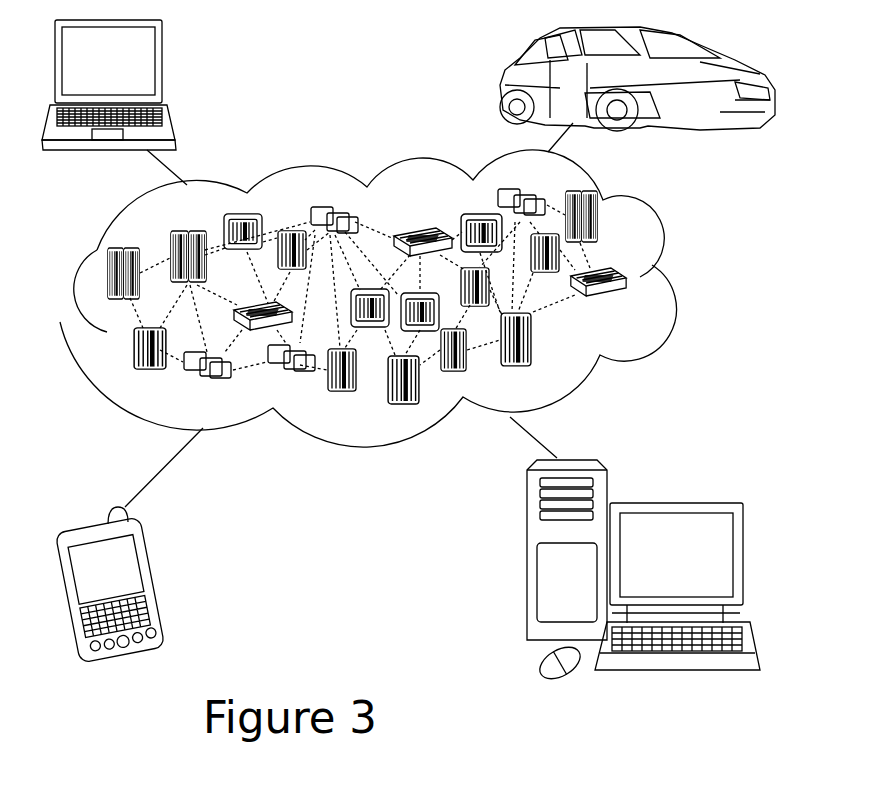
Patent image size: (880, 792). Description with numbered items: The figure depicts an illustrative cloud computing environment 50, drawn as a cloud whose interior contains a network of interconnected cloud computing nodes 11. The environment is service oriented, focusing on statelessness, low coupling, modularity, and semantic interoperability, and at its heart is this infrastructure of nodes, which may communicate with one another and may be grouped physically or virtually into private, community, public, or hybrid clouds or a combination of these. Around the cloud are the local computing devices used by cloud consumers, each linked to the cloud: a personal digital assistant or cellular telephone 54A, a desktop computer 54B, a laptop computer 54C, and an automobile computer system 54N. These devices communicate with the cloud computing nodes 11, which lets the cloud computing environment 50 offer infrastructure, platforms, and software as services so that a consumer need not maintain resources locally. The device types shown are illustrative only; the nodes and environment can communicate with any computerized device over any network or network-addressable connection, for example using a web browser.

The cloud computing environment 50 is at (680, 279).
The cloud computing nodes 11 is at (630, 303).
The personal digital assistant (PDA) or cellular telephone 54A is at (153, 578).
The desktop computer 54B is at (673, 503).
The laptop computer 54C is at (163, 72).
The automobile computer system 54N is at (507, 85).